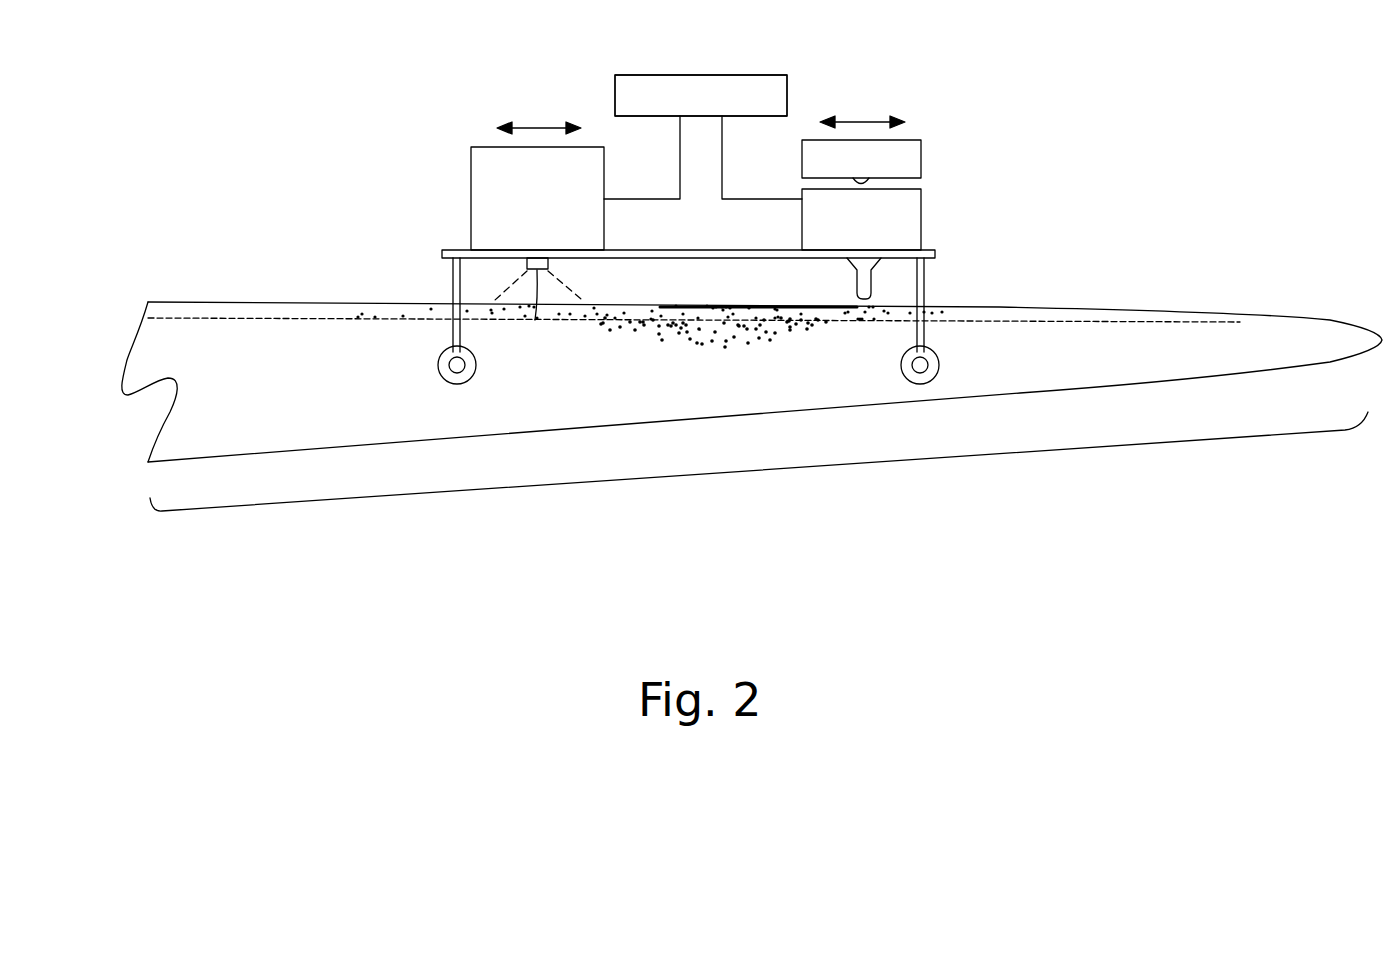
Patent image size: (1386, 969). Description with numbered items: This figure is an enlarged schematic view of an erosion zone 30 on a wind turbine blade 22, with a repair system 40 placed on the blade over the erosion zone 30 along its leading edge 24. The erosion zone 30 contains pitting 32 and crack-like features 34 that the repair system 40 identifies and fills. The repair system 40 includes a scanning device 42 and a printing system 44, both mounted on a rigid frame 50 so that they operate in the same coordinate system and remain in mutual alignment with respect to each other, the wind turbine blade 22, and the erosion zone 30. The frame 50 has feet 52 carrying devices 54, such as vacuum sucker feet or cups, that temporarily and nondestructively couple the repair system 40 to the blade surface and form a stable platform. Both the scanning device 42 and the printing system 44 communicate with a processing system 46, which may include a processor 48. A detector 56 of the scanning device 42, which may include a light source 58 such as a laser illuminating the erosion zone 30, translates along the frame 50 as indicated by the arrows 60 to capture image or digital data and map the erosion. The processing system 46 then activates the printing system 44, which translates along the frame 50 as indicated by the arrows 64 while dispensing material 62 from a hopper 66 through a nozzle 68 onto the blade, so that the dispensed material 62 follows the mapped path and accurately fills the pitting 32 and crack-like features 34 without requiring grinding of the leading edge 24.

The wind turbine blade 22 is at (1316, 316).
The leading edge 24 is at (1108, 306).
The erosion zone 30 is at (759, 466).
The pitting 32 is at (370, 302).
The crack-like features 34 is at (506, 288).
The repair system 40 is at (928, 132).
The scanning device 42 is at (471, 179).
The printing system 44 is at (922, 212).
The processing system 46 is at (752, 74).
The processor 48 is at (701, 95).
The frame 50 is at (936, 254).
The feet 52 is at (452, 330).
The devices 54 is at (455, 385).
The detector 56 is at (549, 264).
The light source 58 is at (535, 320).
The arrows 60 is at (545, 126).
The material 62 is at (843, 319).
The arrows 64 is at (865, 120).
The hopper 66 is at (922, 160).
The nozzle 68 is at (856, 283).